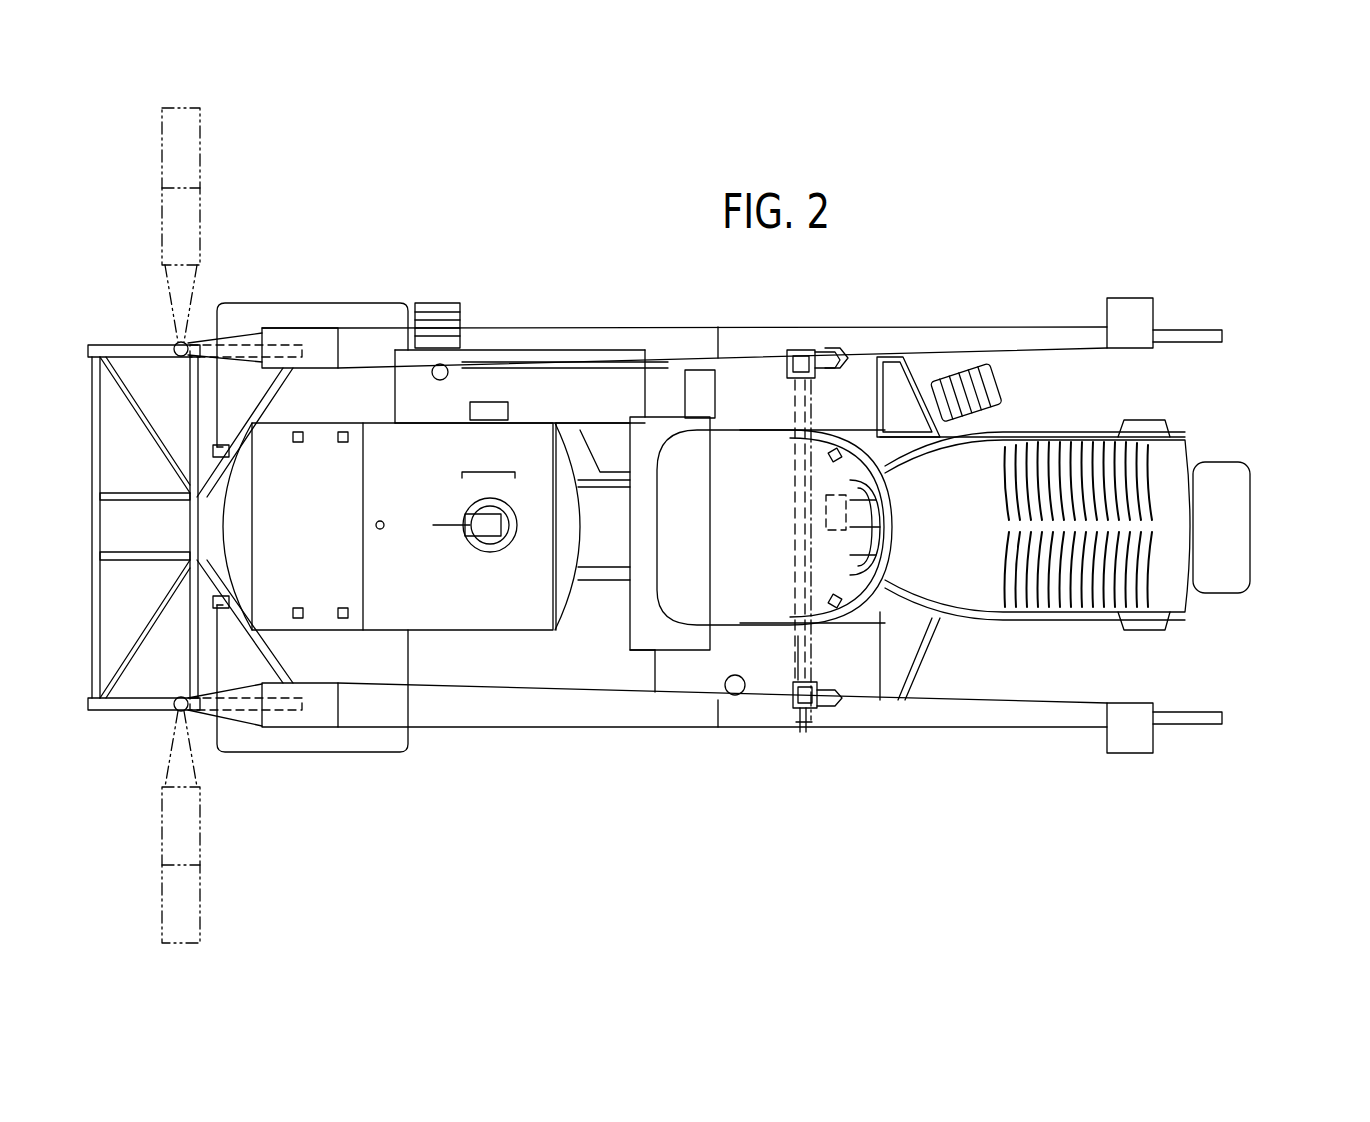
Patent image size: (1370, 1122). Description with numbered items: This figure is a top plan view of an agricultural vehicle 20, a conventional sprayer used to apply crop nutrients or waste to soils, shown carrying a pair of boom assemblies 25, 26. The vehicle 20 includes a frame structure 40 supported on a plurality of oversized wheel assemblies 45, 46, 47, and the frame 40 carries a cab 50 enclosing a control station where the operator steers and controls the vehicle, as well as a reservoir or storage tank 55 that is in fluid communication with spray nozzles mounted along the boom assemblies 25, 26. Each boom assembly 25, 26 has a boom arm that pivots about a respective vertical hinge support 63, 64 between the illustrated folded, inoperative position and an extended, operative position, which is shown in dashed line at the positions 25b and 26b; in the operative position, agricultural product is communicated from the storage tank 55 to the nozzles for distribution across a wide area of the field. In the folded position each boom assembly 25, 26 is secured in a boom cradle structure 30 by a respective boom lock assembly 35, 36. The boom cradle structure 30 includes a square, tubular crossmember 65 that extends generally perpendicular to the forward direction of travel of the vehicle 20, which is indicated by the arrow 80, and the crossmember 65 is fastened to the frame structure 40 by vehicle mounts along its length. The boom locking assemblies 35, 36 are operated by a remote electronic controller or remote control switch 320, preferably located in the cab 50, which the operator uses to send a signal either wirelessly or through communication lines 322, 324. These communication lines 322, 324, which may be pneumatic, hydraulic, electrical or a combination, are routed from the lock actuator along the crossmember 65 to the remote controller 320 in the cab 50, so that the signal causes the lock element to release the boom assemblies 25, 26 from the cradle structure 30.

The vehicle 20 is at (1253, 373).
The boom assembly 25 is at (950, 745).
The extended, operative position of boom assembly 25b is at (212, 853).
The boom assembly 26 is at (1020, 312).
The extended, operative position of boom assembly 26b is at (212, 162).
The boom cradle structure 30 is at (790, 650).
The boom lock assembly 35 is at (803, 730).
The boom lock assembly 36 is at (830, 340).
The frame structure 40 is at (598, 592).
The wheel assembly 45 is at (1243, 462).
The wheel assembly 46 is at (408, 668).
The wheel assembly 47 is at (365, 303).
The cab 50 is at (755, 413).
The storage tank 55 is at (532, 423).
The vertical hinge support 63 is at (163, 716).
The vertical hinge support 64 is at (163, 340).
The crossmember 65 is at (800, 636).
The arrow 80 is at (1095, 841).
The remote control switch 320 is at (838, 490).
The communication line 322 is at (812, 668).
The communication line 324 is at (852, 365).